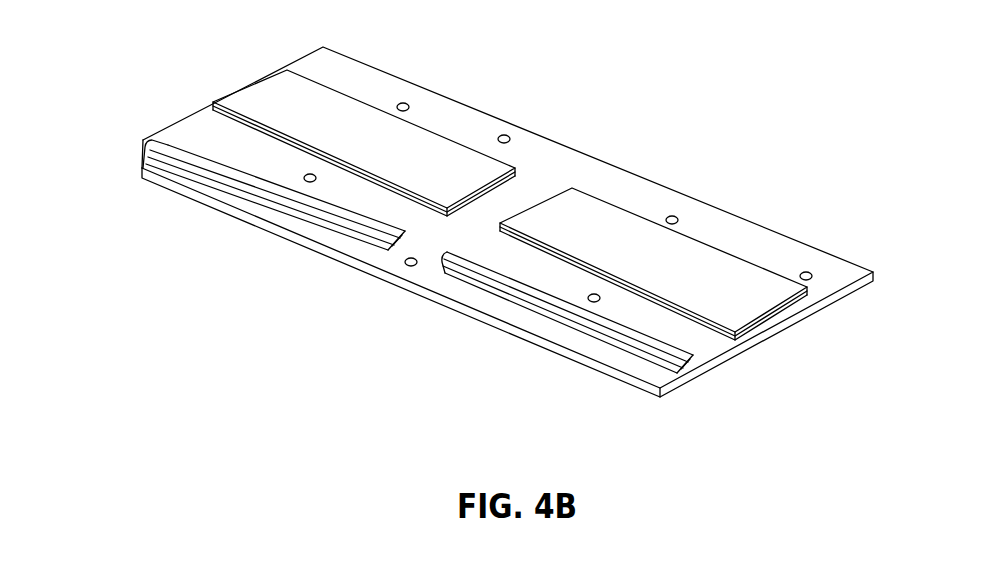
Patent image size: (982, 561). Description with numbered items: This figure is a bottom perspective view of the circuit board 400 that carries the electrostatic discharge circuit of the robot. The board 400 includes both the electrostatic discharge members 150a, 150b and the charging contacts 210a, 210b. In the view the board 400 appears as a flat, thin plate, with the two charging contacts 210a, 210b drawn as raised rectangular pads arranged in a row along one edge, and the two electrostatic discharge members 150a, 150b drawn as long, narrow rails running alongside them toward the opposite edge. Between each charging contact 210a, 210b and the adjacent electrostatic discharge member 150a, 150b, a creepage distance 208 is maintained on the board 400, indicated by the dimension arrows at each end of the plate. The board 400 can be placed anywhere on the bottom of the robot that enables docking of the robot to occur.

The circuit board 400 is at (748, 146).
The charging contact 210a is at (600, 254).
The charging contact 210b is at (319, 135).
The electrostatic discharge member 150a is at (488, 280).
The electrostatic discharge member 150b is at (170, 152).
The creepage distance 208 is at (157, 132).